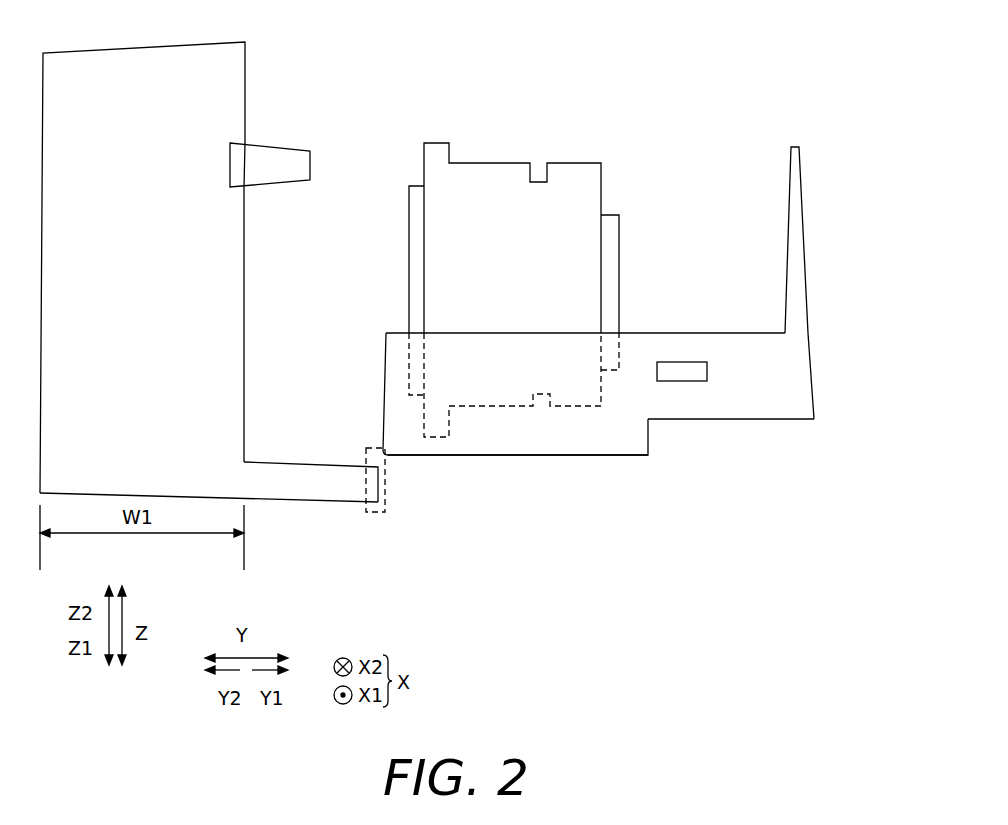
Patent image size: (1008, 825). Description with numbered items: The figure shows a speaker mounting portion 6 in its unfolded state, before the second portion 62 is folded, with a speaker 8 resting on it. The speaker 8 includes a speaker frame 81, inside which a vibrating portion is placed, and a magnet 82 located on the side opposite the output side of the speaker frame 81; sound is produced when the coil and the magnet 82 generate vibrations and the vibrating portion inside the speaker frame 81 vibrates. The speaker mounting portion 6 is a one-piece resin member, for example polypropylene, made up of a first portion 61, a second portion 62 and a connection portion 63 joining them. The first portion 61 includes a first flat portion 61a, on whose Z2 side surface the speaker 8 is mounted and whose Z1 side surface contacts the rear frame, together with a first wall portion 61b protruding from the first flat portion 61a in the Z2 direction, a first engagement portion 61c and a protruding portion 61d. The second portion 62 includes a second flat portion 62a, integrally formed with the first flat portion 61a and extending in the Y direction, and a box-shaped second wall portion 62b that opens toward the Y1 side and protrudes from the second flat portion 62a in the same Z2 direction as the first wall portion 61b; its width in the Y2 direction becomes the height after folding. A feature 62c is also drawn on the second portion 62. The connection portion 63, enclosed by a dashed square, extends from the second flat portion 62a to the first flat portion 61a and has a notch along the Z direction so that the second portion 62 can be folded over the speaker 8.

The speaker mounting portion 6 is at (464, 288).
The speaker 8 is at (529, 277).
The speaker frame 81 is at (424, 162).
The magnet 82 is at (619, 240).
The first portion 61 is at (636, 317).
The first flat portion 61a is at (503, 455).
The first wall portion 61b is at (812, 380).
The first engagement portion 61c is at (687, 362).
The protruding portion 61d is at (803, 273).
The second portion 62 is at (211, 302).
The second flat portion 62a is at (325, 502).
The second wall portion 62b is at (245, 337).
The protrusion of second housing member 62c is at (312, 170).
The connection portion 63 is at (380, 490).